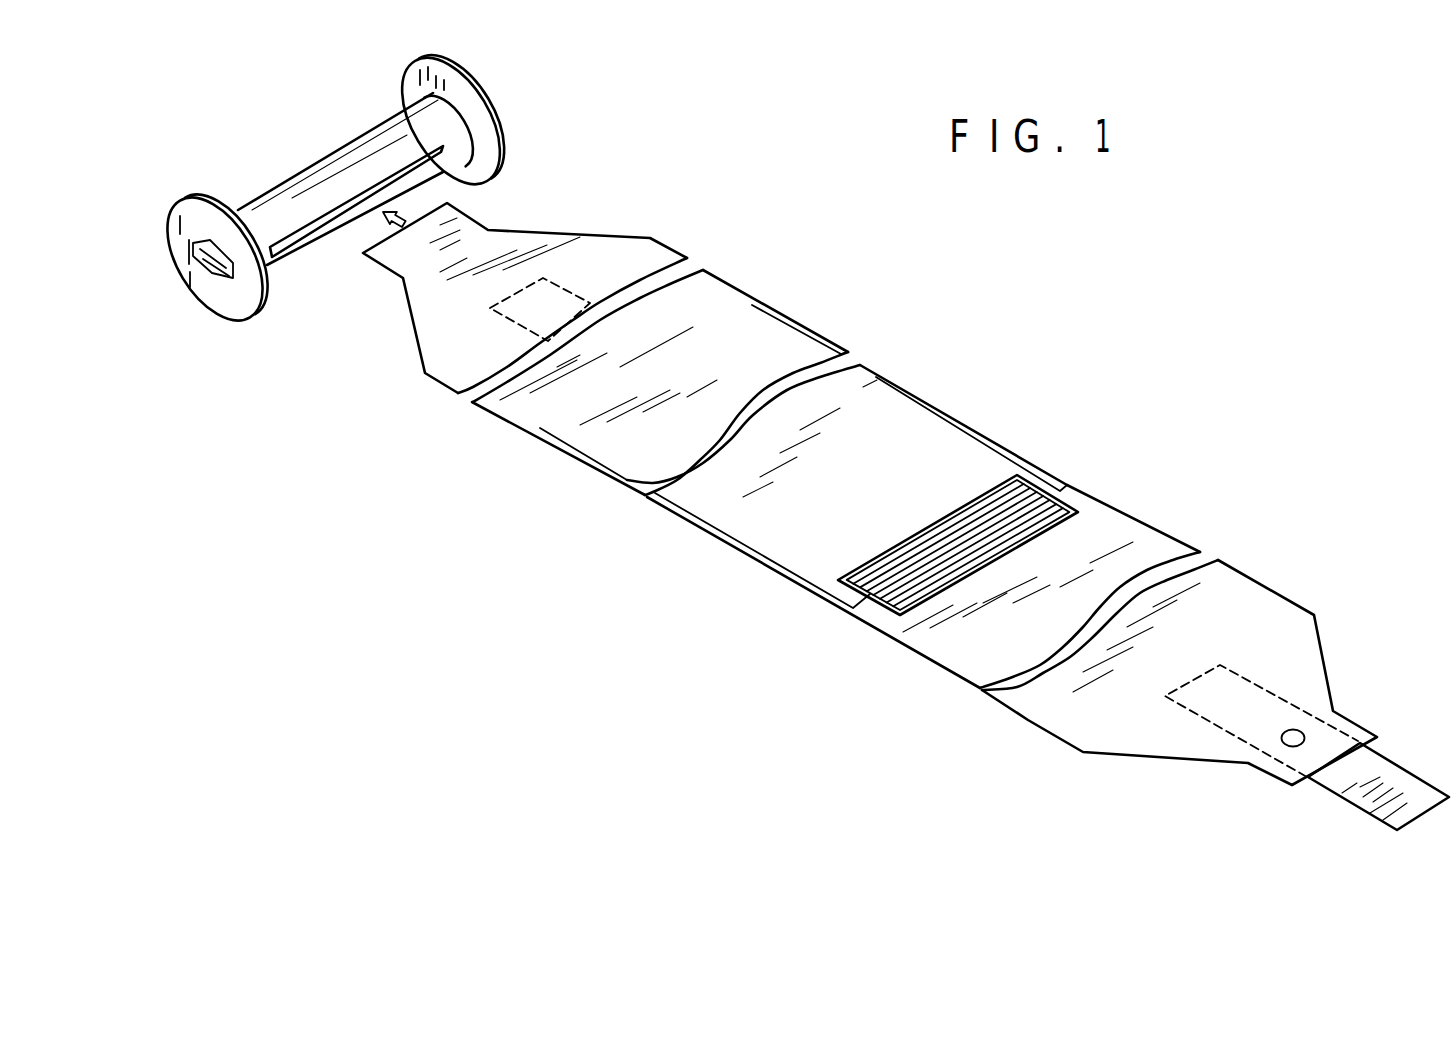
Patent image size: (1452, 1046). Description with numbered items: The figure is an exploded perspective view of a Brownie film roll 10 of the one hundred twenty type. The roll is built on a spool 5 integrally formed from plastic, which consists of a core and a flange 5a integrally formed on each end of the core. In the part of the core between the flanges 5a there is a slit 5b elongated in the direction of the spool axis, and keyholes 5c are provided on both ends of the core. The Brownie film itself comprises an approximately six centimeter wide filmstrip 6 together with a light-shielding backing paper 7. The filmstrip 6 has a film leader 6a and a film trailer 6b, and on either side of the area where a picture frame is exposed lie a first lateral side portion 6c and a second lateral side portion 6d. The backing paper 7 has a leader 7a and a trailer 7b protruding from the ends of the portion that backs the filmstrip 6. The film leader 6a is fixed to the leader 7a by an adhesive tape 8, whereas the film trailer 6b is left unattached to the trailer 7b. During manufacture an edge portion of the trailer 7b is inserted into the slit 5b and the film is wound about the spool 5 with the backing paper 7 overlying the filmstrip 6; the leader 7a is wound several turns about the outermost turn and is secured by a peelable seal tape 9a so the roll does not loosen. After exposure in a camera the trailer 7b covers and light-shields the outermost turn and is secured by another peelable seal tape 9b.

The spool 5 is at (487, 84).
The flange 5a is at (210, 195).
The slit 5b is at (318, 233).
The keyhole 5c is at (211, 268).
The filmstrip 6 is at (897, 427).
The film leader 6a is at (970, 457).
The film trailer 6b is at (737, 345).
The first lateral side portion 6c is at (880, 367).
The second lateral side portion 6d is at (663, 510).
The light-shielding paper 7 is at (720, 543).
The leader 7a is at (1028, 720).
The trailer 7b is at (503, 418).
The adhesive tape 8 is at (892, 613).
The peelable seal tape 9a is at (1336, 791).
The peelable seal tape 9b is at (558, 286).
The Brownie film roll 10 is at (883, 863).